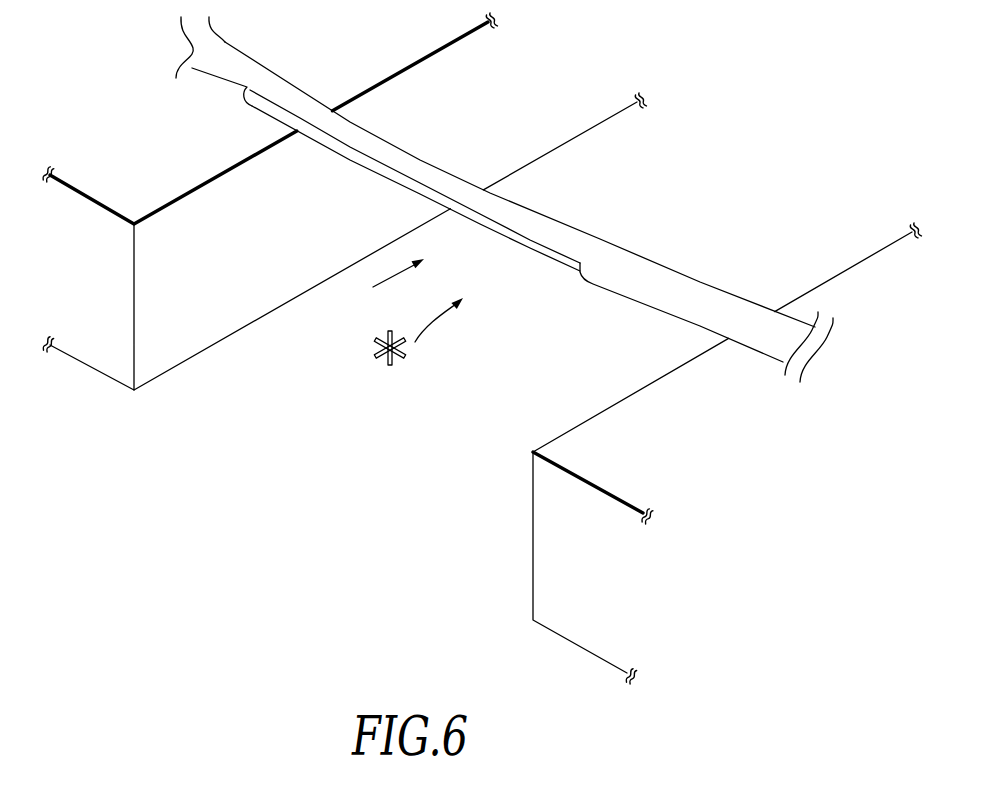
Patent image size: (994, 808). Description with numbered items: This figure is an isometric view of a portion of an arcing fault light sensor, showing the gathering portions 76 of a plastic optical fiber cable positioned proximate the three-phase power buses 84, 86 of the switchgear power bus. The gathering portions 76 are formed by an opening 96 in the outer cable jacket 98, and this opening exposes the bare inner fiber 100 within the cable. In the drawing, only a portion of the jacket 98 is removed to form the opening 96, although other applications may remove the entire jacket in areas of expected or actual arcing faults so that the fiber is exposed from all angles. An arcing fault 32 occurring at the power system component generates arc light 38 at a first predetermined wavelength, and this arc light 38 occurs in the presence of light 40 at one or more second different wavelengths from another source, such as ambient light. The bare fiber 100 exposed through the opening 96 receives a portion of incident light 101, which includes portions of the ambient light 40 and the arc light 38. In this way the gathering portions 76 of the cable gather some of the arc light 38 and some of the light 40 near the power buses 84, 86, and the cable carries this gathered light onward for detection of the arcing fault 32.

The arcing fault 32 is at (385, 357).
The arc light 38 is at (415, 342).
The light 40 is at (377, 283).
The gathering portions 76 is at (504, 199).
The three-phase power bus 84 is at (187, 365).
The three-phase power bus 86 is at (533, 527).
The opening 96 is at (413, 189).
The outer cable jacket 98 is at (230, 80).
The bare inner fiber 100 is at (348, 158).
The incident light 101 is at (533, 262).